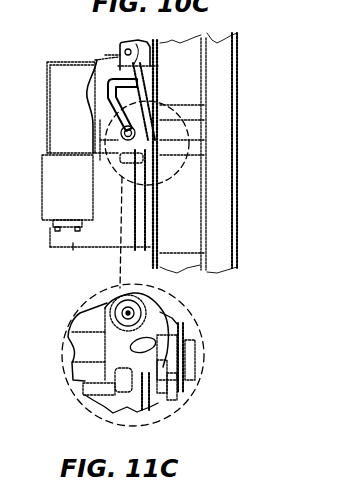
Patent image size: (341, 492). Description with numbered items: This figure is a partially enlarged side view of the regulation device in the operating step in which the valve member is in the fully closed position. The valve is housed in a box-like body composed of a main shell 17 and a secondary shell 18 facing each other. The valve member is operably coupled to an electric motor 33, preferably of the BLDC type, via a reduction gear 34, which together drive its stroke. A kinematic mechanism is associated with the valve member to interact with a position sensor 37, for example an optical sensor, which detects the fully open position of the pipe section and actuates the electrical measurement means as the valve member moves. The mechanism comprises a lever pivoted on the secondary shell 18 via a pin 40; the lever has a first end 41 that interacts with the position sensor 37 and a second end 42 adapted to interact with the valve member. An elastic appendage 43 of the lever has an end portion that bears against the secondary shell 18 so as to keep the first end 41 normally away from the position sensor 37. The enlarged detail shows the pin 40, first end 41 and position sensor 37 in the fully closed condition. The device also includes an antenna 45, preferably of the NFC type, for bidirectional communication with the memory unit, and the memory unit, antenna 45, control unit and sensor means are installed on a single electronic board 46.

The main shell 17 is at (222, 52).
The secondary shell 18 is at (147, 41).
The electric motor 33 is at (70, 200).
The reduction gear 34 is at (72, 121).
The position sensor 37 is at (153, 382).
The pin 40 is at (128, 313).
The first end 41 is at (108, 373).
The second end 42 is at (125, 95).
The elastic appendage 43 is at (158, 60).
The antenna 45 is at (72, 232).
The electronic board 46 is at (140, 247).